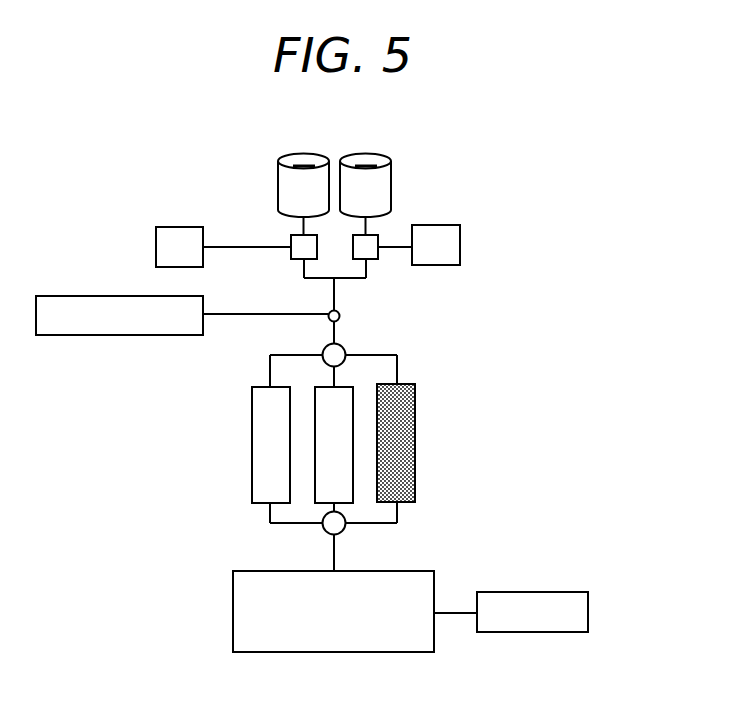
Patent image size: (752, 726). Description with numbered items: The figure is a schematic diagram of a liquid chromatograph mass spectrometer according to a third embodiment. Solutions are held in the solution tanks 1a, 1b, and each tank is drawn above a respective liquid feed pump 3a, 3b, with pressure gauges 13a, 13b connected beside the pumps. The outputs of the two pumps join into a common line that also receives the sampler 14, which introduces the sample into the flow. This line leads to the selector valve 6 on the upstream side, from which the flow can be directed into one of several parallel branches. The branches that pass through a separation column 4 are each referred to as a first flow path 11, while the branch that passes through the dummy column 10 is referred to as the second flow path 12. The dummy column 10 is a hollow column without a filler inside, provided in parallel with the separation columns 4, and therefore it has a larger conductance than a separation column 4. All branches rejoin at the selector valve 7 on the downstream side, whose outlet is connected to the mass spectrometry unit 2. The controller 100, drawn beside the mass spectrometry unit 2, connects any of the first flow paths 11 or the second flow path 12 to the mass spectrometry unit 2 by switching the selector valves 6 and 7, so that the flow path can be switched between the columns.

The solution tank 1a is at (307, 152).
The solution tank 1b is at (371, 152).
The liquid feed pump 3a is at (300, 259).
The liquid feed pump 3b is at (370, 259).
The pressure gauge 13a is at (183, 226).
The pressure gauge 13b is at (433, 225).
The first flow path 11 is at (342, 300).
The sampler 14 is at (86, 296).
The selector valve 6 is at (322, 352).
The second flow path 12 is at (397, 365).
The dummy column 10 is at (415, 423).
The separation column 4 is at (252, 425).
The selector valve 7 is at (322, 527).
The mass spectrometry unit 2 is at (233, 613).
The controller 100 is at (590, 613).